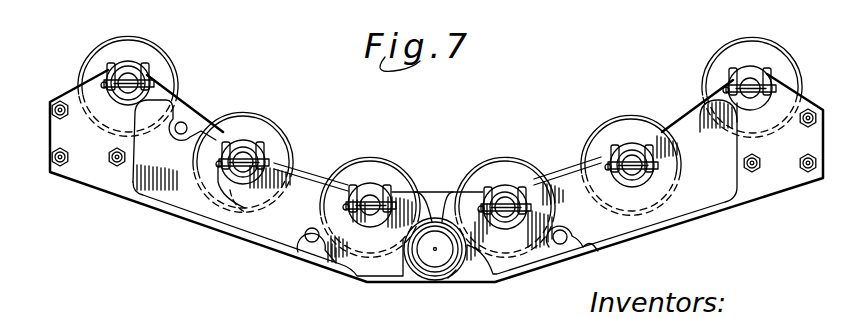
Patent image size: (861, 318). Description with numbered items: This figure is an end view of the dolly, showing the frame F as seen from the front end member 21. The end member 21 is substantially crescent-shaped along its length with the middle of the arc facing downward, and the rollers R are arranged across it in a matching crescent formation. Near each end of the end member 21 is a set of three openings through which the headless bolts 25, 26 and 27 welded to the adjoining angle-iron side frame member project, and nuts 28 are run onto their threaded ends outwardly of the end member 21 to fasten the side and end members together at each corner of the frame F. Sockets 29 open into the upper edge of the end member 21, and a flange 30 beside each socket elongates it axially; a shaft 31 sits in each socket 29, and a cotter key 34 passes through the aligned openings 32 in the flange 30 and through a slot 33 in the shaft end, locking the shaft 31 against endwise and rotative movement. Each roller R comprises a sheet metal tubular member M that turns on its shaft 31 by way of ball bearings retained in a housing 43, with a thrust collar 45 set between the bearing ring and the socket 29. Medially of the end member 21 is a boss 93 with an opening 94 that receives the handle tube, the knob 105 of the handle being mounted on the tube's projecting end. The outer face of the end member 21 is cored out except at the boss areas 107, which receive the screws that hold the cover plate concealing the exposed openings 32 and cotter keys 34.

The front end member 21 is at (577, 157).
The headless bolt 25 is at (58, 100).
The headless bolt 26 is at (113, 161).
The headless bolt 27 is at (60, 167).
The nut 28 is at (108, 161).
The socket 29 is at (145, 70).
The flange 30 is at (113, 97).
The shaft 31 is at (244, 158).
The aligned openings 32 is at (221, 215).
The slot 33 is at (243, 204).
The cotter key 34 is at (266, 163).
The housing 43 is at (483, 177).
The thrust collar 45 is at (481, 177).
The boss 93 is at (437, 220).
The opening 94 is at (419, 283).
The knob 105 is at (449, 278).
The boss area 107 is at (187, 124).
The roller R is at (128, 38).
The frame F is at (330, 163).
The tubular member M is at (388, 163).